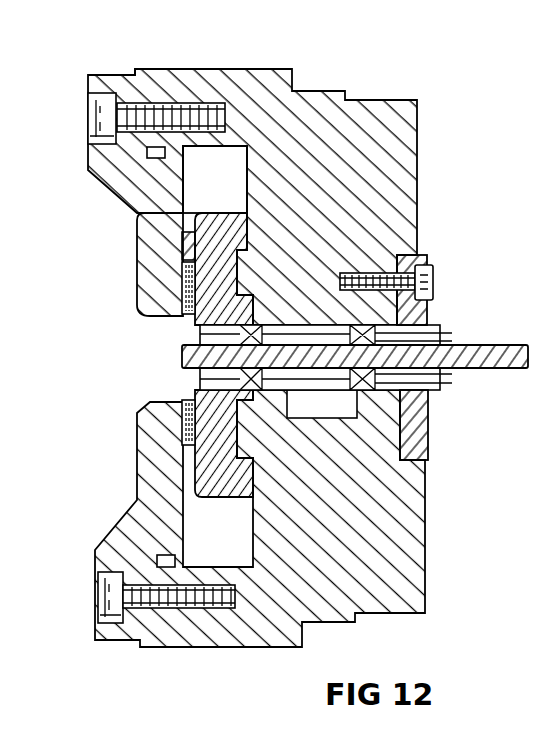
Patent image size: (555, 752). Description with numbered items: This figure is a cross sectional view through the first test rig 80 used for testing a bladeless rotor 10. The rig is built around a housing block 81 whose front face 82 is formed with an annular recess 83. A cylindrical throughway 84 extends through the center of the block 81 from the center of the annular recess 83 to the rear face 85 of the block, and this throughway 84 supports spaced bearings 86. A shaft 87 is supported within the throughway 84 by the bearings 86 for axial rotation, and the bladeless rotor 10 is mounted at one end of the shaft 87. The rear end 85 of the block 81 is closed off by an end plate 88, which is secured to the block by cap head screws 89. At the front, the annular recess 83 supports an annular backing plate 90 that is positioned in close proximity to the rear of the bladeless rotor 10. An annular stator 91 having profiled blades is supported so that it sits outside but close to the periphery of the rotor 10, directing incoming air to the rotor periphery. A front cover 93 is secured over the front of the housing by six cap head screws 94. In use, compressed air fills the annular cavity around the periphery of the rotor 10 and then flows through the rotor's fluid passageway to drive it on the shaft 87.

The bladeless rotor 10 is at (175, 325).
The test rig 80 is at (350, 76).
The housing block 81 is at (415, 565).
The front face 82 is at (123, 72).
The annular recess 83 is at (246, 146).
The cylindrical throughway 84 is at (200, 425).
The rear face 85 is at (418, 145).
The bearings 86 is at (182, 298).
The shaft 87 is at (498, 348).
The end plate 88 is at (425, 438).
The cap head screws 89 is at (437, 266).
The annular backing plate 90 is at (195, 210).
The annular stator 91 is at (188, 252).
The front cover 93 is at (130, 157).
The cap head screws 94 is at (90, 104).